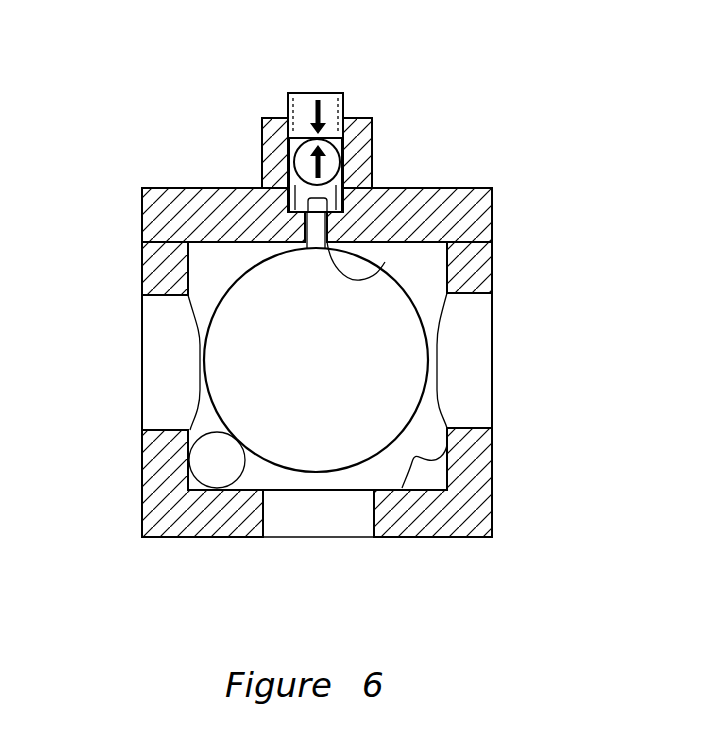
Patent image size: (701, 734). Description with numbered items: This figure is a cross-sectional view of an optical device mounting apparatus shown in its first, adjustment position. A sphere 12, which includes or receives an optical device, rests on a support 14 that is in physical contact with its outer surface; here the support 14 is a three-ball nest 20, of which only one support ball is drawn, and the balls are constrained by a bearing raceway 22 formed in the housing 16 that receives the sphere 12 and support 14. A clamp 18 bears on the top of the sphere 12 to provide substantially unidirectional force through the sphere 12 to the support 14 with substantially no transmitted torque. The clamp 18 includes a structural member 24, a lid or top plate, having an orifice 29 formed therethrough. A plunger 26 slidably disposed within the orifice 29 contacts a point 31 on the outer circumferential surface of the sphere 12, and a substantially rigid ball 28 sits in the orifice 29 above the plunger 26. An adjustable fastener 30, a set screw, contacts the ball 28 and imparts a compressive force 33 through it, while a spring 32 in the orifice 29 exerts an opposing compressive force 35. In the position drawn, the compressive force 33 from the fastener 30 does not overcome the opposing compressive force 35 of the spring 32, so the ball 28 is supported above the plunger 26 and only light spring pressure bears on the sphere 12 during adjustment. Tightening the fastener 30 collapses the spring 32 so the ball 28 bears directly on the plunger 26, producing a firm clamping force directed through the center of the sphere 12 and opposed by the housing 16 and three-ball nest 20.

The sphere 12 is at (408, 342).
The support 14 is at (187, 538).
The housing 16 is at (492, 262).
The clamp 18 is at (372, 118).
The three-ball nest 20 is at (231, 471).
The bearing raceway 22 is at (420, 455).
The structural member 24 is at (492, 188).
The plunger 26 is at (312, 247).
The ball 28 is at (290, 150).
The orifice 29 is at (344, 193).
The adjustable fastener 30 is at (318, 92).
The point 31 is at (376, 272).
The spring 32 is at (296, 192).
The compressive force 33 is at (343, 100).
The opposing compressive force 35 is at (305, 158).